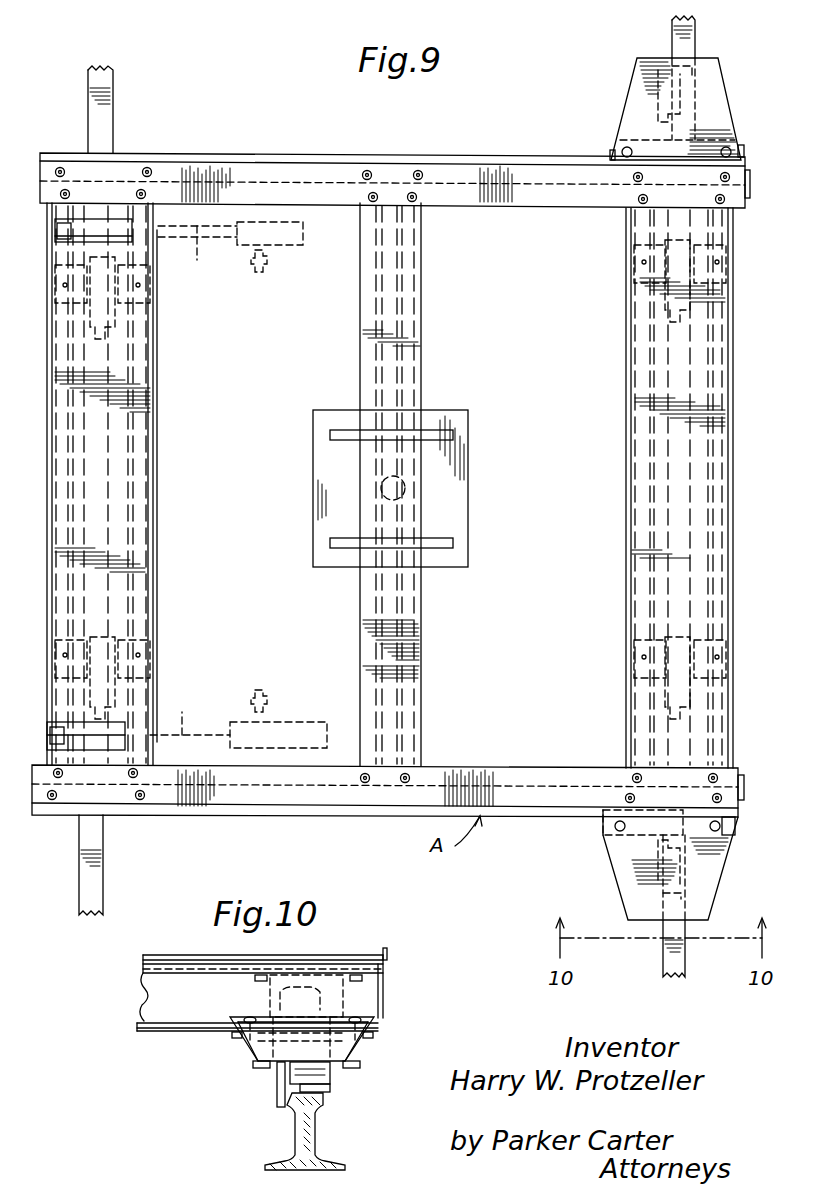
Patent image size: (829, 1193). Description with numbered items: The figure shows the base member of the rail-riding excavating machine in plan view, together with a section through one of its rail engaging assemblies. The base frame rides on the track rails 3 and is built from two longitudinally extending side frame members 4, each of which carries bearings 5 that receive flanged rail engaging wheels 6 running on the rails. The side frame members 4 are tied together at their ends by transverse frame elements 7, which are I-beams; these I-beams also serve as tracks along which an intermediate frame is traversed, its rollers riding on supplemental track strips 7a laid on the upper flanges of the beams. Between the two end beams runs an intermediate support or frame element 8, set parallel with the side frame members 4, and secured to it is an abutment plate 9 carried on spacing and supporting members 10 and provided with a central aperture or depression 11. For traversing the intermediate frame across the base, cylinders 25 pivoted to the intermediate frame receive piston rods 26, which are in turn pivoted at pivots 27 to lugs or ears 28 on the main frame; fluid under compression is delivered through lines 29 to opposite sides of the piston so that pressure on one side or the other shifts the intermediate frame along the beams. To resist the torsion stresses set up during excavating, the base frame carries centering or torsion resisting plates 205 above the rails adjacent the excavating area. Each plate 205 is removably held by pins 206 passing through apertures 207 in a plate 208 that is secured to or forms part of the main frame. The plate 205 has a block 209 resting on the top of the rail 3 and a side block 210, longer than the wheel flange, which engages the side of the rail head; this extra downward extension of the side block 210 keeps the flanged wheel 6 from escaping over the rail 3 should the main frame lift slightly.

In FIG. 9, the track rail 3 is at (88, 76).
In FIG. 10, the track rail 3 is at (313, 1136).
In FIG. 9, the side frame member 4 is at (156, 432).
In FIG. 9, the bearing 5 is at (55, 297).
In FIG. 10, the bearing 5 is at (255, 1068).
In FIG. 9, the flanged rail engaging wheel 6 is at (95, 322).
In FIG. 10, the flanged rail engaging wheel 6 is at (330, 1076).
In FIG. 9, the transverse or end frame element 7 is at (311, 205).
In FIG. 10, the transverse or end frame element 7 is at (160, 993).
In FIG. 9, the track strip 7a is at (510, 200).
In FIG. 10, the track strip 7a is at (160, 955).
In FIG. 9, the intermediate support or frame element 8 is at (360, 612).
In FIG. 9, the abutment plate 9 is at (326, 479).
In FIG. 9, the spacing and supporting member 10 is at (330, 434).
In FIG. 9, the central aperture or depression 11 is at (385, 497).
In FIG. 9, the cylinder 25 is at (300, 246).
In FIG. 9, the piston rod 26 is at (191, 480).
In FIG. 9, the pivot 27 is at (57, 232).
In FIG. 9, the lug or ear 28 is at (101, 219).
In FIG. 9, the fluid line 29 is at (257, 274).
In FIG. 9, the centering or torsion resisting plate 205 is at (720, 96).
In FIG. 10, the centering or torsion resisting plate 205 is at (268, 1050).
In FIG. 9, the pin 206 is at (627, 146).
In FIG. 10, the pin 206 is at (250, 1017).
In FIG. 9, the aperture 207 is at (610, 154).
In FIG. 10, the aperture 207 is at (236, 1040).
In FIG. 9, the plate 208 is at (744, 152).
In FIG. 10, the plate 208 is at (232, 1036).
In FIG. 9, the block 209 is at (722, 66).
In FIG. 10, the block 209 is at (318, 1090).
In FIG. 9, the side block 210 is at (655, 95).
In FIG. 10, the side block 210 is at (278, 1105).